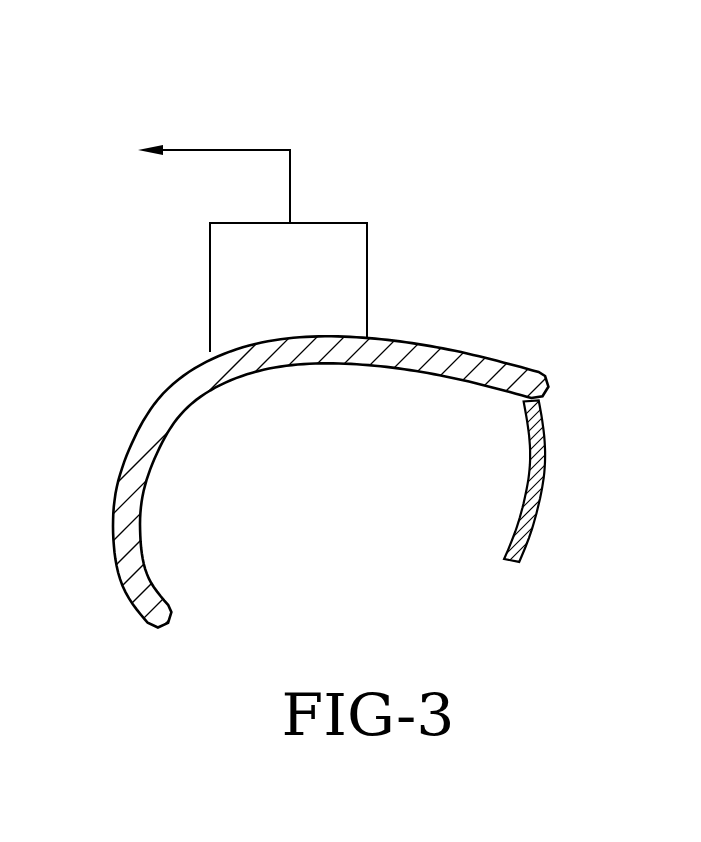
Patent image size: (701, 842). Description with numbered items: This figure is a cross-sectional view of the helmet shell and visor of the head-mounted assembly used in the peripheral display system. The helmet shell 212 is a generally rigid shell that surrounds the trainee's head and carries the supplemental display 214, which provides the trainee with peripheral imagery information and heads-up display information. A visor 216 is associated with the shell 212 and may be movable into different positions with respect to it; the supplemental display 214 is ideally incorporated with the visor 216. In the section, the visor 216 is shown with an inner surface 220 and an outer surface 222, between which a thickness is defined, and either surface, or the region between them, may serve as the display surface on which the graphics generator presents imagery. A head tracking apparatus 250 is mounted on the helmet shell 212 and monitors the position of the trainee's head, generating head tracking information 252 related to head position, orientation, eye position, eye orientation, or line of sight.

The helmet shell 212 is at (373, 357).
The supplemental display 214 is at (550, 550).
The visor 216 is at (553, 428).
The inner surface 220 is at (528, 465).
The outer surface 222 is at (548, 463).
The head tracking apparatus 250 is at (210, 288).
The head tracking information 252 is at (227, 150).